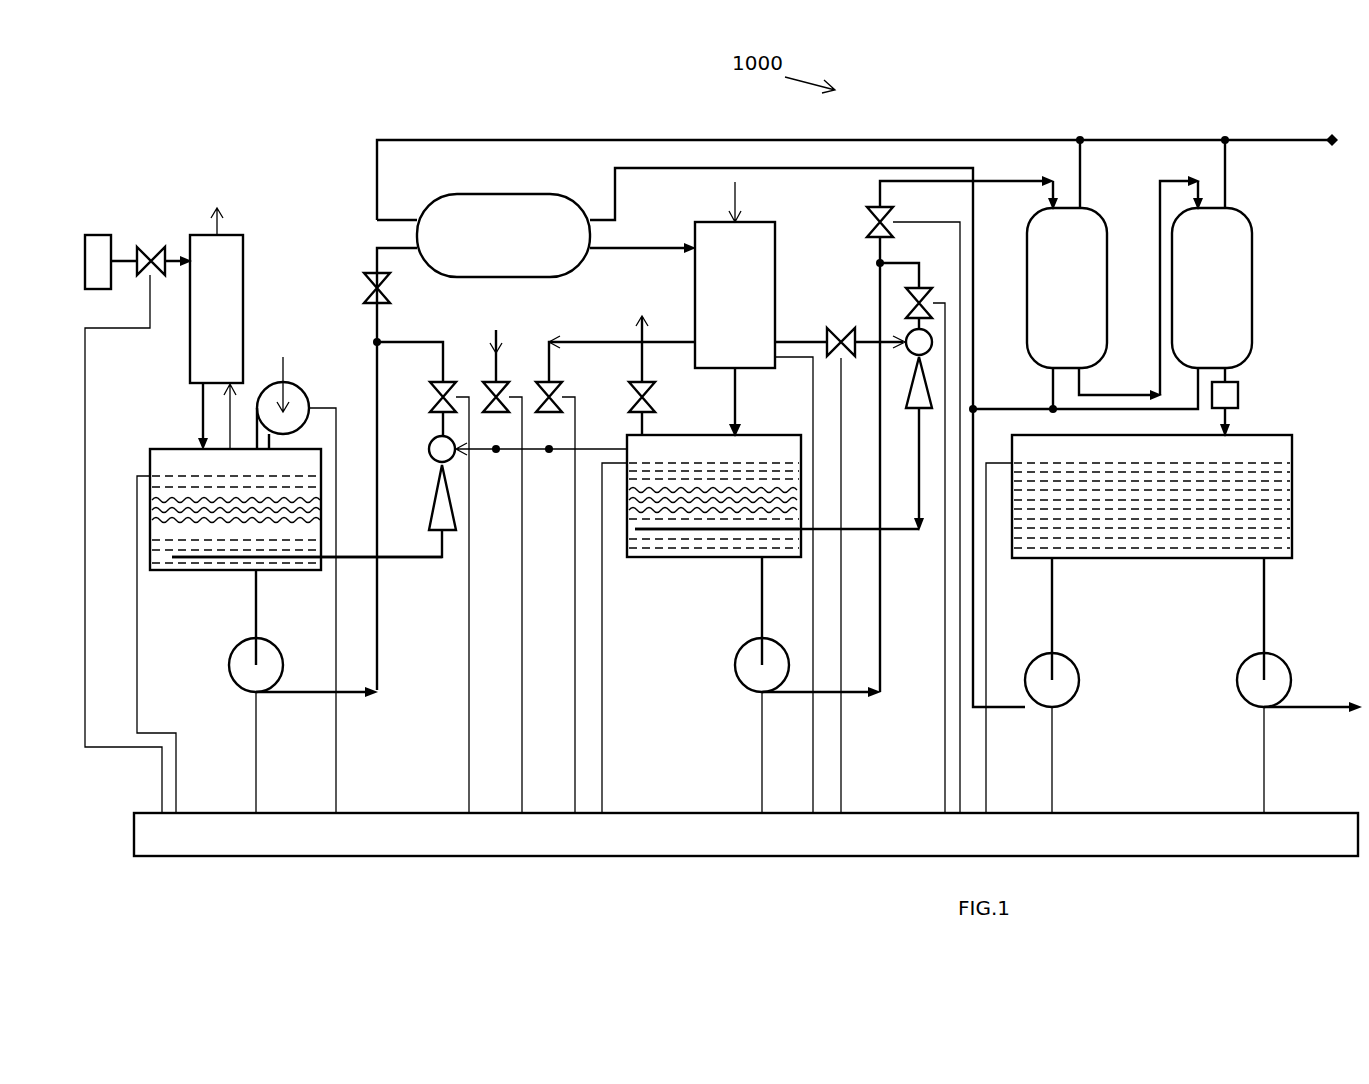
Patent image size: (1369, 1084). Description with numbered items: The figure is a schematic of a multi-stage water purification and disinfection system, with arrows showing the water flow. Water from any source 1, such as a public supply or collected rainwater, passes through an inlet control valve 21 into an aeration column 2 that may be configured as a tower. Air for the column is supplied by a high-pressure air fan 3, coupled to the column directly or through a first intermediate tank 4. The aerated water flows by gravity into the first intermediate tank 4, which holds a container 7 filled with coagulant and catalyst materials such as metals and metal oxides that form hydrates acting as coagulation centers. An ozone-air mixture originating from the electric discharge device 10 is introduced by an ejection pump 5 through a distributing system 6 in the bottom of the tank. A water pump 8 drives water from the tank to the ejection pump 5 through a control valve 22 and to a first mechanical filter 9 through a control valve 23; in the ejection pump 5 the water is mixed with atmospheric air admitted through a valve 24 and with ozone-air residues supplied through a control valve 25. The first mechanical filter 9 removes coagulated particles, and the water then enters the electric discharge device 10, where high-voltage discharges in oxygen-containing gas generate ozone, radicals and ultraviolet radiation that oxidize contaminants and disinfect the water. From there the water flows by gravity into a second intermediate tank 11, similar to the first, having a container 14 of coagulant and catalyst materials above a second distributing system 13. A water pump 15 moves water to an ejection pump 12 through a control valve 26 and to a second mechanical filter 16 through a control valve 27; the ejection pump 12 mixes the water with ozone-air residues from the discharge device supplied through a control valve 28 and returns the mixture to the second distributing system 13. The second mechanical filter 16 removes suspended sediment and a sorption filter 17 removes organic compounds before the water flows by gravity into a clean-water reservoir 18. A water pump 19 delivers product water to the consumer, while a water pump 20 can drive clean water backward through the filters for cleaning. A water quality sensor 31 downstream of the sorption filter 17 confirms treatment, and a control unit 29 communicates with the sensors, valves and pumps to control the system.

The source 1 is at (99, 235).
The inlet control valve 21 is at (148, 257).
The aeration column 2 is at (245, 262).
The air fan 3 is at (308, 395).
The first intermediate tank 4 is at (150, 449).
The container 7 is at (158, 518).
The distributing system 6 is at (213, 557).
The water pump 8 is at (238, 675).
The first mechanical filter 9 is at (417, 238).
The control valve 23 is at (365, 285).
The control valve 22 is at (430, 403).
The valve 24 is at (483, 390).
The control valve 25 is at (537, 390).
The ejection pump 5 is at (448, 453).
The electric discharge device 10 is at (775, 278).
The control valve 27 is at (873, 222).
The control valve 26 is at (927, 288).
The ejection pump 12 is at (918, 338).
The control valve 28 is at (837, 340).
The second intermediate tank 11 is at (643, 558).
The container 14 is at (643, 512).
The second distributing system 13 is at (728, 560).
The water pump 15 is at (762, 683).
The second mechanical filter 16 is at (1027, 272).
The sorption filter 17 is at (1253, 265).
The water quality sensor 31 is at (1239, 398).
The clean-water reservoir 18 is at (1292, 488).
The water pump 20 is at (1068, 700).
The water pump 19 is at (1255, 707).
The control unit 29 is at (418, 813).